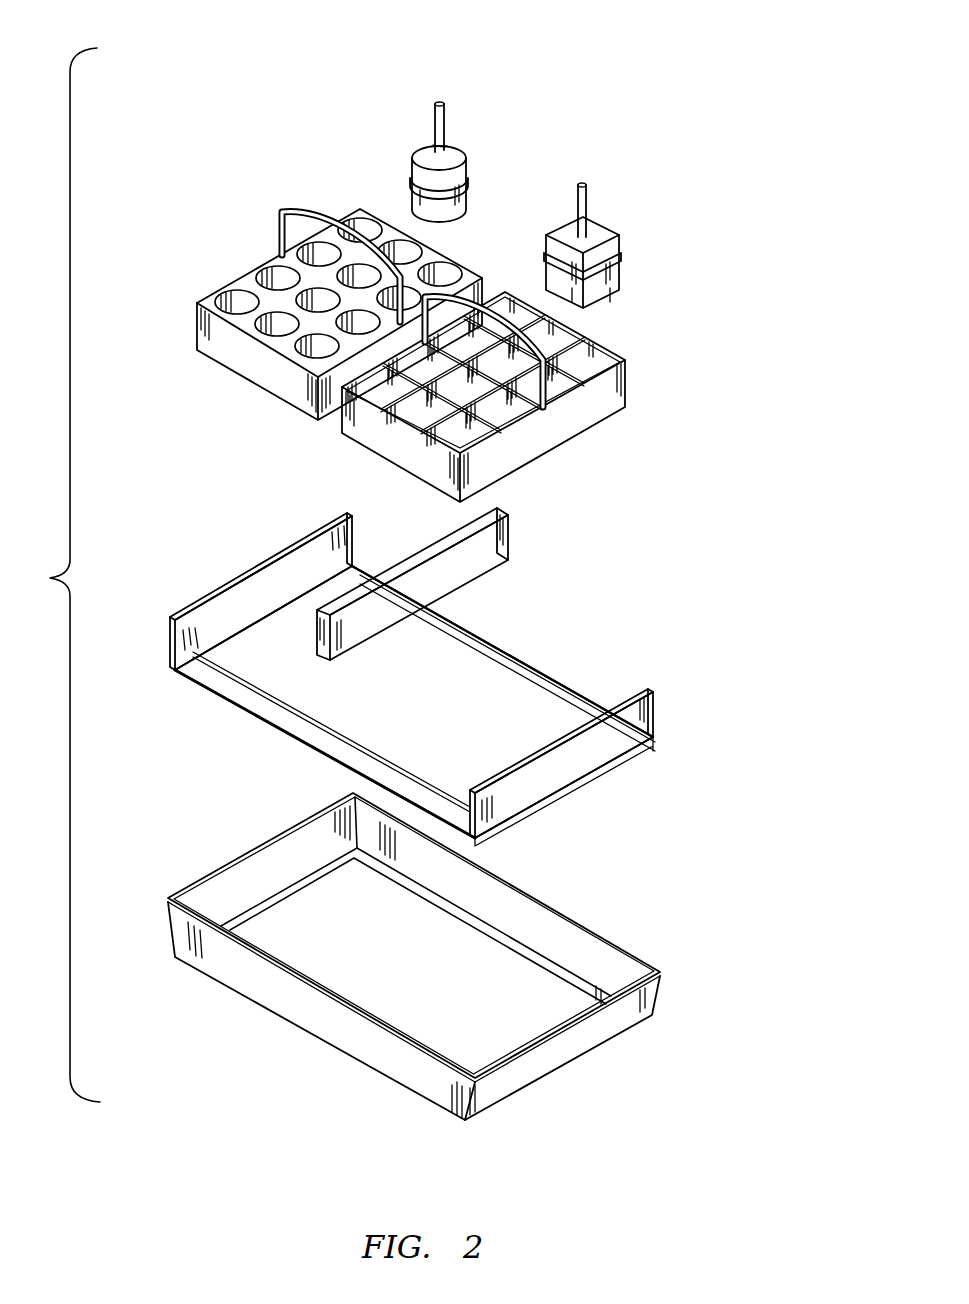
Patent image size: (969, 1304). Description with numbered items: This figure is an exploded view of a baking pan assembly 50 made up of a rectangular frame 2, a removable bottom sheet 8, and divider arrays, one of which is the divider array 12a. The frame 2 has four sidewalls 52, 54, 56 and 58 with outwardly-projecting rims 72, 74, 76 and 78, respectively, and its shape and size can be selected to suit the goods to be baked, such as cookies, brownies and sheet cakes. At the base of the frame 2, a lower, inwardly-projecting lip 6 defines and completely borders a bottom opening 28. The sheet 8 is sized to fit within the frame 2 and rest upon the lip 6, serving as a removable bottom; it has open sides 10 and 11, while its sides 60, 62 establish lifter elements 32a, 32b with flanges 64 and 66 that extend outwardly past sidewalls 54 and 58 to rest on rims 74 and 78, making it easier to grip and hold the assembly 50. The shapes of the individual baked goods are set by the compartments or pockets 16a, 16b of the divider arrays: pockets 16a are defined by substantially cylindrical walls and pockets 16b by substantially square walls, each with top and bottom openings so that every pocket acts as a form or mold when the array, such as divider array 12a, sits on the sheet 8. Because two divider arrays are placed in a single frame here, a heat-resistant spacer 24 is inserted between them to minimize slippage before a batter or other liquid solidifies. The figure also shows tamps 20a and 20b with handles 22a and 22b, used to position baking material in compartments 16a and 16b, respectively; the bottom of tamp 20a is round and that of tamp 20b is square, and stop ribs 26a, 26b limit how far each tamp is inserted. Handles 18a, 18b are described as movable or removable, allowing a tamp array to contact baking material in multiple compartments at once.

The rectangular frame 2 is at (439, 952).
The lower lip 6 is at (493, 928).
The removable bottom sheet 8 is at (391, 706).
The open side 10 is at (459, 647).
The open side 11 is at (235, 680).
The divider array 12a is at (314, 257).
The pockets 16a is at (265, 270).
The pockets 16b is at (506, 413).
The handle 18a is at (312, 209).
The handle 18b is at (613, 349).
The tamp 20a is at (526, 117).
The tamp 20b is at (660, 232).
The handle 22a is at (447, 115).
The handle 22b is at (592, 200).
The spacer 24 is at (508, 540).
The stop rib 26a is at (467, 178).
The stop rib 26b is at (625, 262).
The bottom opening 28 is at (406, 1016).
The lifter element 32a is at (243, 559).
The lifter element 32b is at (630, 745).
The baking pan assembly 50 is at (55, 575).
The sidewall 52 is at (560, 932).
The sidewall 54 is at (568, 1048).
The sidewall 56 is at (318, 1015).
The sidewall 58 is at (270, 862).
The side 60 is at (598, 748).
The side 62 is at (172, 642).
The flange 64 is at (657, 698).
The flange 66 is at (338, 516).
The rim 72 is at (590, 920).
The rim 74 is at (615, 1002).
The rim 76 is at (255, 960).
The rim 78 is at (198, 880).